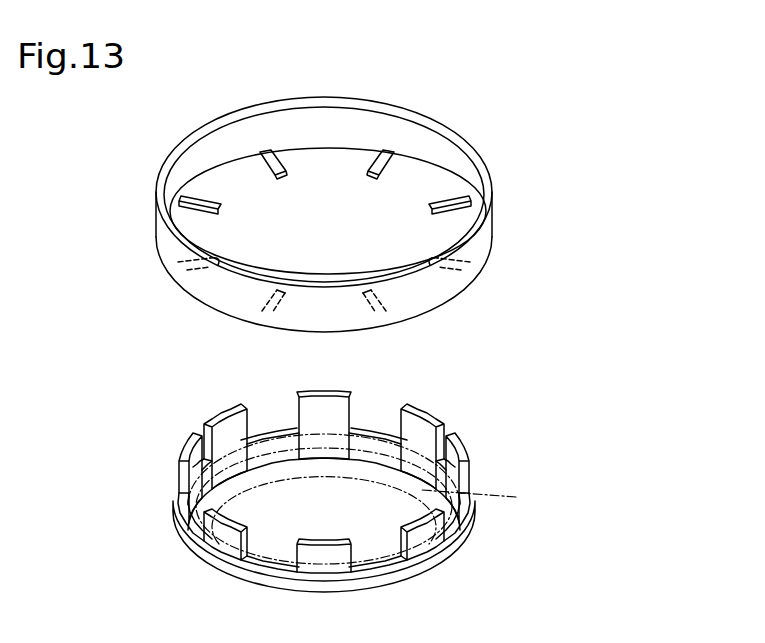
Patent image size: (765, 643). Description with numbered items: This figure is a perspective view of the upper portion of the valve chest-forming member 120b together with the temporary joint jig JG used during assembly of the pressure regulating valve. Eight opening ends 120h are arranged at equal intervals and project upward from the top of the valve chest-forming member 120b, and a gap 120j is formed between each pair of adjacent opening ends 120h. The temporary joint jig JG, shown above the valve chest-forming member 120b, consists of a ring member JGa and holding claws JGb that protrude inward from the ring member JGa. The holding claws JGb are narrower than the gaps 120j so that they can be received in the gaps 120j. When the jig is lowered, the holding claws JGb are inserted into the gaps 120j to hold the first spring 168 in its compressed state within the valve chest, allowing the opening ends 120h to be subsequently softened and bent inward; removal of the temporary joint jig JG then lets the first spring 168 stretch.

The temporary joint jig JG is at (401, 214).
The ring member JGa is at (485, 230).
The holding claws JGb is at (454, 194).
The valve chest-forming member 120b is at (365, 486).
The opening ends 120h is at (417, 428).
The gap 120j is at (377, 423).
The first spring 168 is at (372, 499).